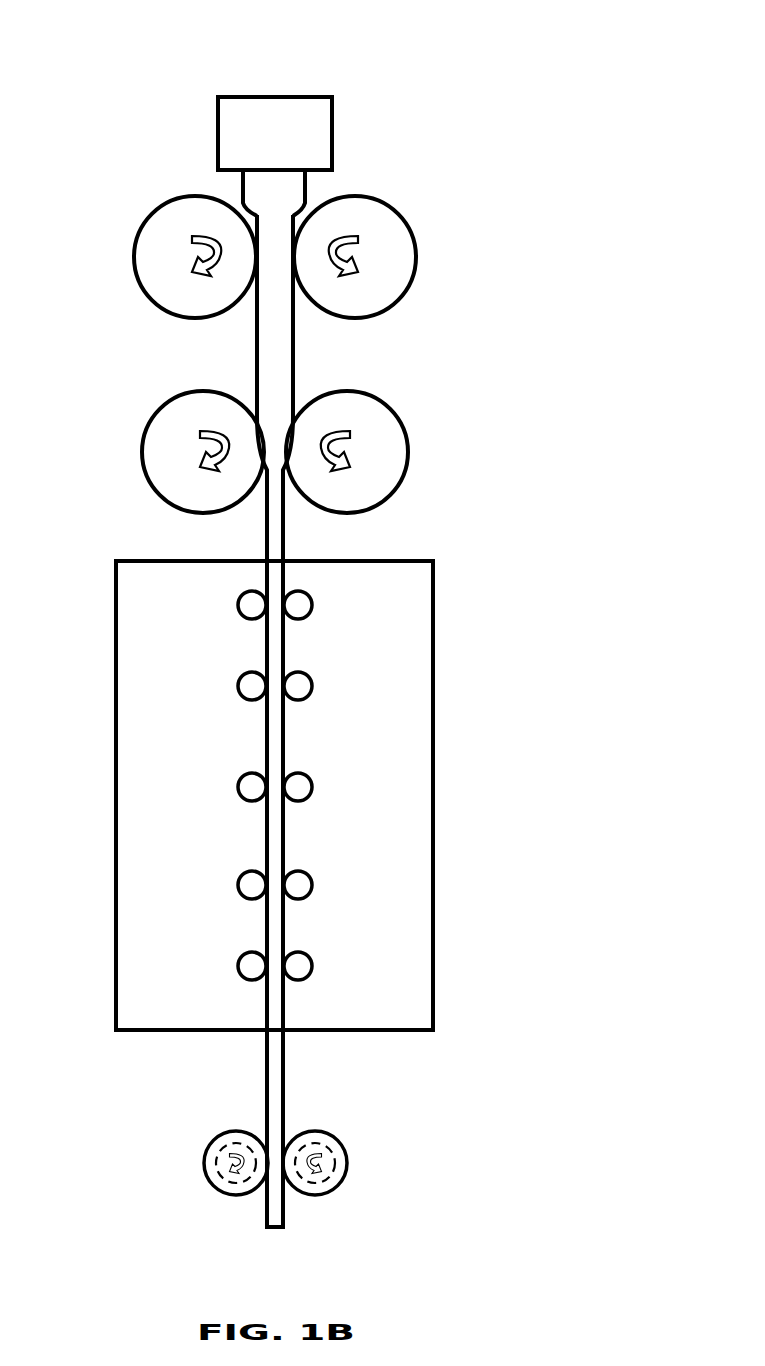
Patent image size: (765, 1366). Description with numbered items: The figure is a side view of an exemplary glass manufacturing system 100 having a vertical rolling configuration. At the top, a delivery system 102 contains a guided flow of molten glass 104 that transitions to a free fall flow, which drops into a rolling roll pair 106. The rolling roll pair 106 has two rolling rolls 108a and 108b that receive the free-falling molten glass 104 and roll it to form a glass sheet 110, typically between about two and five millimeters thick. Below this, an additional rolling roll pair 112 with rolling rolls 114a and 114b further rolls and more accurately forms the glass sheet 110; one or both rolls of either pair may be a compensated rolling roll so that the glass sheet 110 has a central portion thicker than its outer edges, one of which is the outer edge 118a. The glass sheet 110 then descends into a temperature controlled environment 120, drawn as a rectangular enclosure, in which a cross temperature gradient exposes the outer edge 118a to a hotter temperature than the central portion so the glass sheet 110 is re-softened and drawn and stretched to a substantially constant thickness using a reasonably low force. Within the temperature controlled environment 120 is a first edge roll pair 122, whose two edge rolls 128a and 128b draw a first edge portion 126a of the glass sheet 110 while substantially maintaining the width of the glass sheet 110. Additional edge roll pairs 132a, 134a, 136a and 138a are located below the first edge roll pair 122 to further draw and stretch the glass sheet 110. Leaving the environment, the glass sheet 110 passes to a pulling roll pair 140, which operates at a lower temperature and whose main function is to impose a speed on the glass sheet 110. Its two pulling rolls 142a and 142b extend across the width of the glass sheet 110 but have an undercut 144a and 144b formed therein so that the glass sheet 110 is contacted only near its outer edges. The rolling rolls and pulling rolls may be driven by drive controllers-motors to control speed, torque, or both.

The glass manufacturing system 100 is at (546, 40).
The delivery system 102 is at (332, 131).
The molten glass 104 is at (305, 186).
The rolling roll pair 106 is at (264, 248).
The rolling roll 108a is at (408, 292).
The rolling roll 108b is at (143, 293).
The glass sheet 110 is at (294, 340).
The additional rolling roll pair 112 is at (264, 443).
The rolling roll 114a is at (400, 489).
The rolling roll 114b is at (150, 487).
The outer edge 118a is at (275, 354).
The temperature controlled environment 120 is at (433, 686).
The first edge roll pair 122 is at (283, 616).
The first edge portion 126a is at (265, 671).
The edge roll 128a is at (308, 597).
The edge roll 128b is at (242, 597).
The additional edge roll pair 132a is at (307, 698).
The additional edge roll pair 134a is at (307, 799).
The additional edge roll pair 136a is at (307, 897).
The additional edge roll pair 138a is at (307, 978).
The pulling roll pair 140 is at (282, 1183).
The pulling roll 142a is at (343, 1151).
The pulling roll 142b is at (207, 1151).
The undercut 144a is at (334, 1170).
The undercut 144b is at (217, 1170).